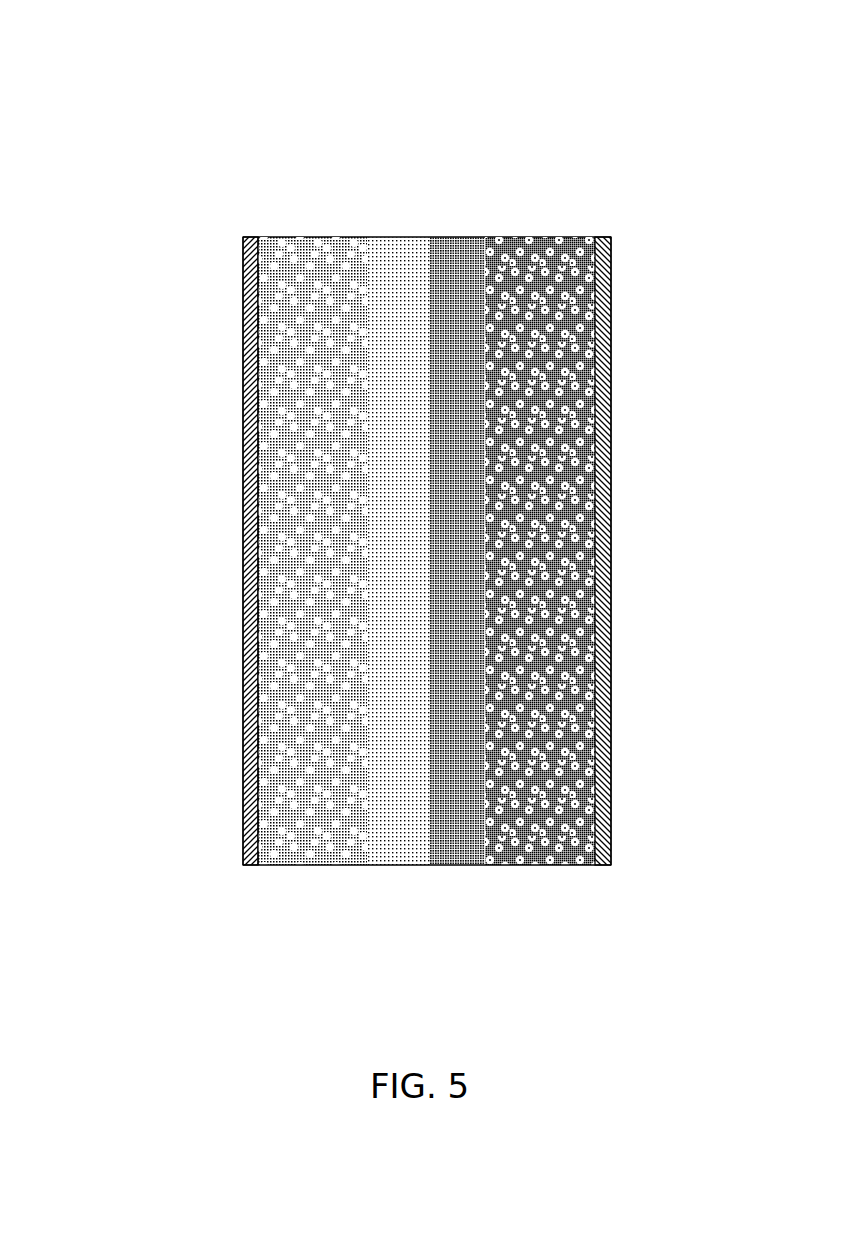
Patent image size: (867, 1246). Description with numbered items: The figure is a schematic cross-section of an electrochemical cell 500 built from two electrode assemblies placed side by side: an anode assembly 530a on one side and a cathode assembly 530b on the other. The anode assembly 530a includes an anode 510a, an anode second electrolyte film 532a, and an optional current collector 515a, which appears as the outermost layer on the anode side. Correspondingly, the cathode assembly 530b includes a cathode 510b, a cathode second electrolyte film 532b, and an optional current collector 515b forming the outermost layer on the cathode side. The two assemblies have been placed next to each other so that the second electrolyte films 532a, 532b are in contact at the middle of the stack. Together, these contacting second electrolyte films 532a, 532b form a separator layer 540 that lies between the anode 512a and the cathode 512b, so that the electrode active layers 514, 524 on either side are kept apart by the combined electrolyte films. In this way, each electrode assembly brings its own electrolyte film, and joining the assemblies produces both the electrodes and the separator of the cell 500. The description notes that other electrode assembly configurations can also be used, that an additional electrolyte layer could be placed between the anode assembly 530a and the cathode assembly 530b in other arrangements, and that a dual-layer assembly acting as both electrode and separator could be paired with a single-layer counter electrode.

The electrochemical cell 500 is at (135, 90).
The anode 510a is at (303, 893).
The cathode 510b is at (569, 890).
The anode 512a is at (278, 323).
The cathode 512b is at (590, 288).
The anode active material layer 514 is at (270, 577).
The cathode active material layer 524 is at (557, 580).
The current collector 515a is at (247, 518).
The current collector 515b is at (607, 460).
The anode assembly 530a is at (425, 230).
The cathode assembly 530b is at (606, 230).
The anode second electrolyte film 532a is at (377, 848).
The cathode second electrolyte film 532b is at (477, 852).
The separator layer 540 is at (485, 867).